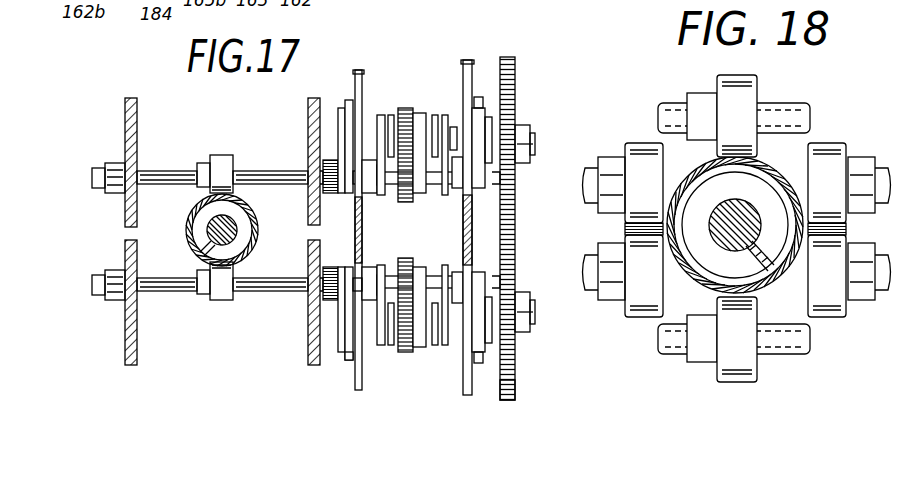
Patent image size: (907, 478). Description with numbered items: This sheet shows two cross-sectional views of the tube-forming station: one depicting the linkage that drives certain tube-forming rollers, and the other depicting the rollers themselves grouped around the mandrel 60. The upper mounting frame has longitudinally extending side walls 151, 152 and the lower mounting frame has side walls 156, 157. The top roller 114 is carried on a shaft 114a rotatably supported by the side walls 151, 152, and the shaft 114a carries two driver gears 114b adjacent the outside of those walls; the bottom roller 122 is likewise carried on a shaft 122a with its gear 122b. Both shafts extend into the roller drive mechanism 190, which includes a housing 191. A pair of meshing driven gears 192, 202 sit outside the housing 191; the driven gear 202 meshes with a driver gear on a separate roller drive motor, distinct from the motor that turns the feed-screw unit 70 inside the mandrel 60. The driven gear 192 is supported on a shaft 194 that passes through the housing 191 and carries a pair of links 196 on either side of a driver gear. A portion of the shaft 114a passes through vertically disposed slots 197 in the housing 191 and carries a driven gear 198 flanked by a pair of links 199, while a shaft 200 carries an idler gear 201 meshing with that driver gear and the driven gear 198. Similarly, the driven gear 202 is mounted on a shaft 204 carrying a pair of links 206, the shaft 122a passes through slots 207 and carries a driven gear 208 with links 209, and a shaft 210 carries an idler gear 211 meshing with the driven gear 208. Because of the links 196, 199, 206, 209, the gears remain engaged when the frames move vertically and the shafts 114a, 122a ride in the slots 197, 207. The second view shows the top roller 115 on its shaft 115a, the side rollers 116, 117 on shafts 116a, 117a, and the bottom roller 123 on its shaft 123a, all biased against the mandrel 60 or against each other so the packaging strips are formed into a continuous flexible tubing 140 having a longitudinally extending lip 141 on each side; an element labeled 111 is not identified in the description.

In FIG. 17, the side wall 151 is at (125, 108).
In FIG. 17, the side wall 156 is at (125, 248).
In FIG. 17, the side wall 152 is at (308, 112).
In FIG. 17, the side wall 157 is at (308, 352).
In FIG. 17, the top roller 114 is at (218, 155).
In FIG. 17, the shaft 114a is at (150, 172).
In FIG. 17, the driver gear 114b is at (107, 165).
In FIG. 17, the bottom roller 122 is at (218, 300).
In FIG. 17, the shaft 122a is at (172, 285).
In FIG. 17, the gear 122b is at (115, 300).
In FIG. 17, the mandrel 60 is at (190, 236).
In FIG. 18, the mandrel 60 is at (790, 275).
In FIG. 17, the feed-screw unit 70 is at (212, 224).
In FIG. 18, the feed-screw unit 70 is at (752, 210).
In FIG. 17, the roller drive mechanism 190 is at (537, 61).
In FIG. 17, the housing 191 is at (472, 222).
In FIG. 17, the driven gear 192 is at (500, 75).
In FIG. 17, the shaft 194 is at (487, 130).
In FIG. 17, the links 196 is at (435, 115).
In FIG. 17, the slots 197 is at (362, 190).
In FIG. 17, the driven gear 198 is at (368, 193).
In FIG. 17, the links 199 is at (380, 115).
In FIG. 17, the shaft 200 is at (455, 133).
In FIG. 17, the idler gear 201 is at (406, 108).
In FIG. 17, the driven gear 202 is at (517, 392).
In FIG. 17, the shaft 204 is at (493, 297).
In FIG. 17, the links 206 is at (436, 345).
In FIG. 17, the slots 207 is at (472, 265).
In FIG. 17, the driven gear 208 is at (407, 258).
In FIG. 17, the links 209 is at (385, 245).
In FIG. 17, the shaft 210 is at (372, 340).
In FIG. 17, the idler gear 211 is at (391, 345).
In FIG. 18, the top roller 115 is at (717, 85).
In FIG. 18, the shaft 115a is at (780, 112).
In FIG. 18, the side roller 116 is at (640, 143).
In FIG. 18, the shaft 116a is at (585, 178).
In FIG. 18, the side roller 117 is at (835, 318).
In FIG. 18, the shaft 117a is at (585, 280).
In FIG. 18, the roller 111 is at (640, 318).
In FIG. 18, the bottom roller 123 is at (755, 375).
In FIG. 18, the shaft 123a is at (676, 345).
In FIG. 18, the continuous flexible tubing 140 is at (783, 170).
In FIG. 18, the lip 141 is at (840, 237).